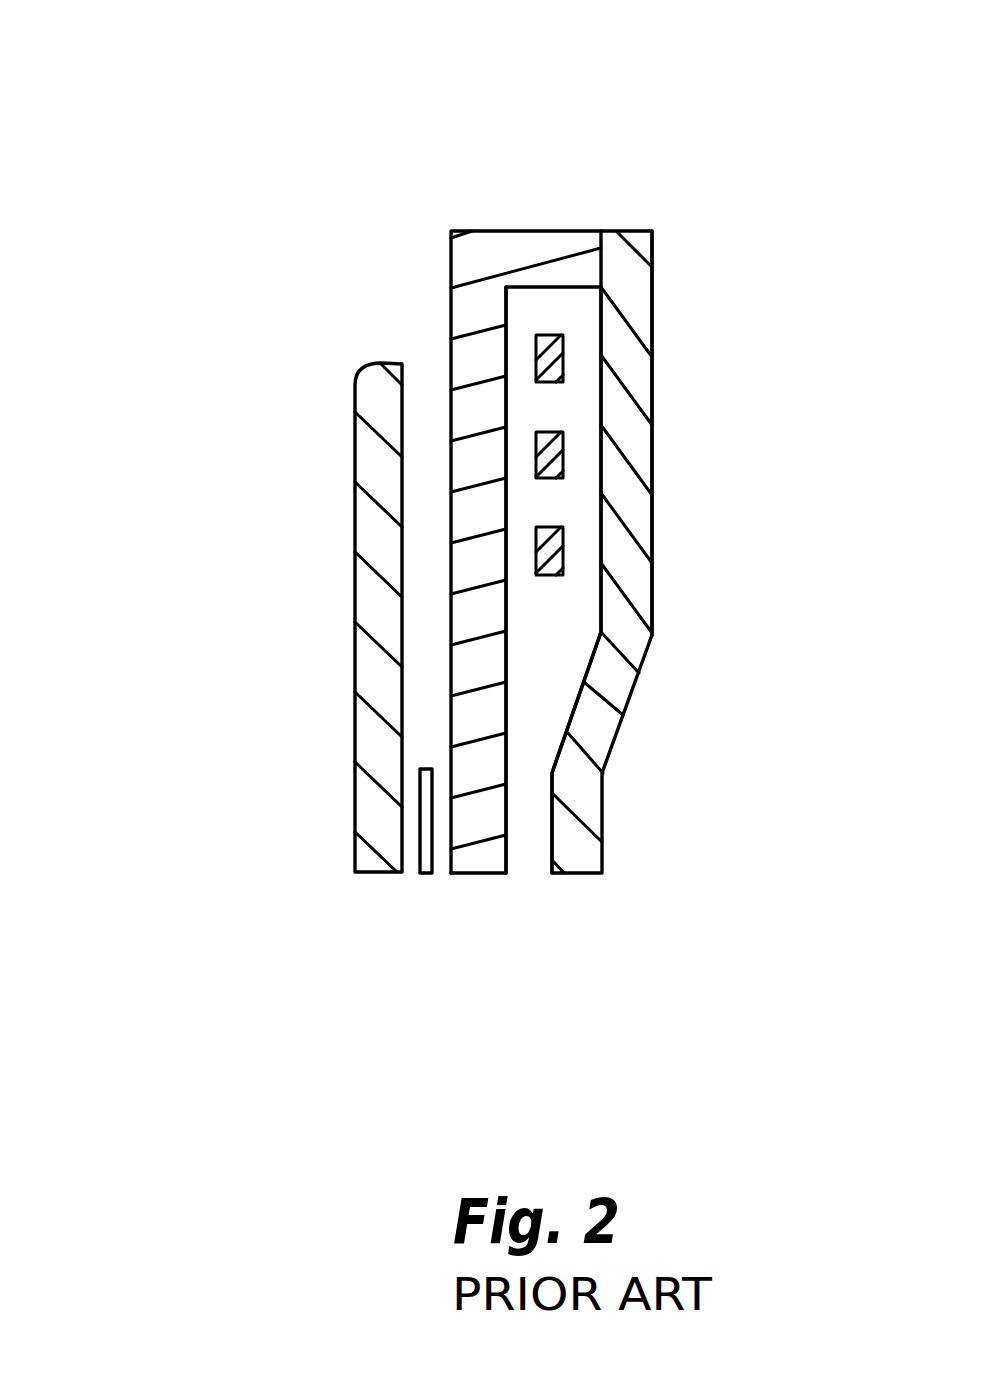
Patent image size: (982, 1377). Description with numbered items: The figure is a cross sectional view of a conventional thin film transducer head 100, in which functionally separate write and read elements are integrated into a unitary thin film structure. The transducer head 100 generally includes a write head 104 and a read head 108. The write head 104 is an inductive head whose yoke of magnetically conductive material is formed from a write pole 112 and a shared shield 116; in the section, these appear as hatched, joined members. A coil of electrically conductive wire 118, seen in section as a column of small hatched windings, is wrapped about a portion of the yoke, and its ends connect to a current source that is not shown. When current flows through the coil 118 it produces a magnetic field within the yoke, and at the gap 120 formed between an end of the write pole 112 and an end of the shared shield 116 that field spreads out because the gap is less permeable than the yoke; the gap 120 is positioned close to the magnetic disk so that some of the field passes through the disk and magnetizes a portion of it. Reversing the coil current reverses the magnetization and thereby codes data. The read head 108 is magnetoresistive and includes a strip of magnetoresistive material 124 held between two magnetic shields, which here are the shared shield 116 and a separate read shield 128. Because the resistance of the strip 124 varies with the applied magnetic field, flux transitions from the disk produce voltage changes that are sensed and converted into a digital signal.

The thin film transducer head 100 is at (562, 96).
The write head 104 is at (630, 904).
The read head 108 is at (400, 908).
The write pole 112 is at (642, 542).
The shared shield 116 is at (490, 848).
The coil of electrically conductive wire 118 is at (562, 362).
The gap 120 is at (530, 835).
The strip of magnetoresistive material 124 is at (428, 862).
The read shield 128 is at (355, 718).